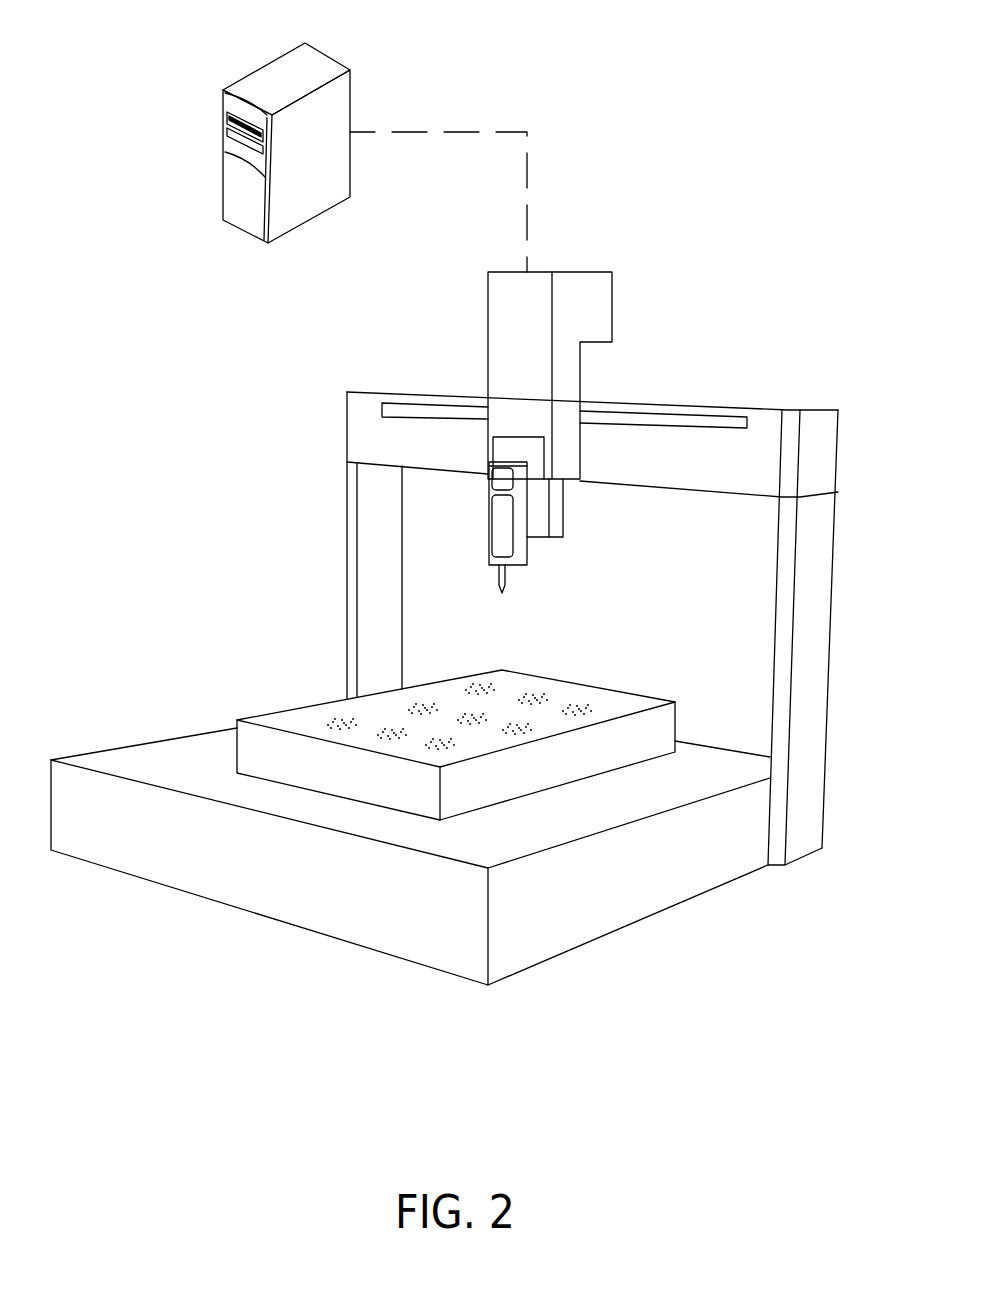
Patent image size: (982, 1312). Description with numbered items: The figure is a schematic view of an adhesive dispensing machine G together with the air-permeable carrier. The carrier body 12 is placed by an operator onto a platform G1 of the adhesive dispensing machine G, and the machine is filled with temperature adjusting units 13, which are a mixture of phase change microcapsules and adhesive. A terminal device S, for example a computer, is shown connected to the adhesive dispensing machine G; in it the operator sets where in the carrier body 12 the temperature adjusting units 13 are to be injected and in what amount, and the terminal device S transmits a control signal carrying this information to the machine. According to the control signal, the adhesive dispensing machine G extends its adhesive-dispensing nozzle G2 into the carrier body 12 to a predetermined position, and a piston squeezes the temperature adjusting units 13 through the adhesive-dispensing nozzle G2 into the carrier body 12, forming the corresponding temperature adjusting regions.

The terminal device S is at (315, 70).
The adhesive dispensing machine G is at (820, 341).
The platform G1 is at (148, 858).
The adhesive-dispensing nozzle G2 is at (498, 572).
The carrier body 12 is at (345, 768).
The temperature adjusting units 13 is at (342, 720).